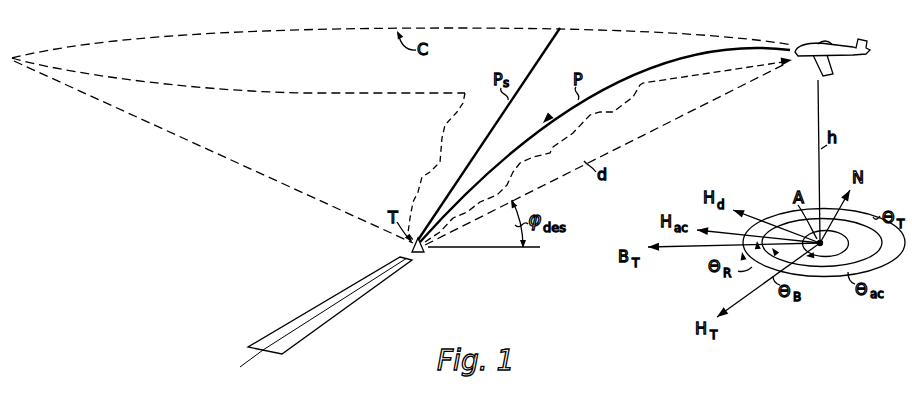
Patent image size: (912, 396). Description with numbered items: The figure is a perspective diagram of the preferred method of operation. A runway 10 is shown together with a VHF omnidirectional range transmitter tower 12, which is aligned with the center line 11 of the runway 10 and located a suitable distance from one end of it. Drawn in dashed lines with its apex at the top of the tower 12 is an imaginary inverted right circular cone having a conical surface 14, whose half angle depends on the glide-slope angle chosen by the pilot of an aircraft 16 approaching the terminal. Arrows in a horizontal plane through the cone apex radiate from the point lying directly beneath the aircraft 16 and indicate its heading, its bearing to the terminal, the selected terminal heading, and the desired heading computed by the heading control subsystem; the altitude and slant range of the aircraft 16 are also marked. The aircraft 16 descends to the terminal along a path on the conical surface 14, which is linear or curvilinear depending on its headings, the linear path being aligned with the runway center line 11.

The runway 10 is at (328, 301).
The center line 11 is at (255, 355).
The VHF omnidirectional range (VOR) transmitter tower 12 is at (422, 253).
The conical surface 14 is at (222, 158).
The aircraft 16 is at (845, 45).